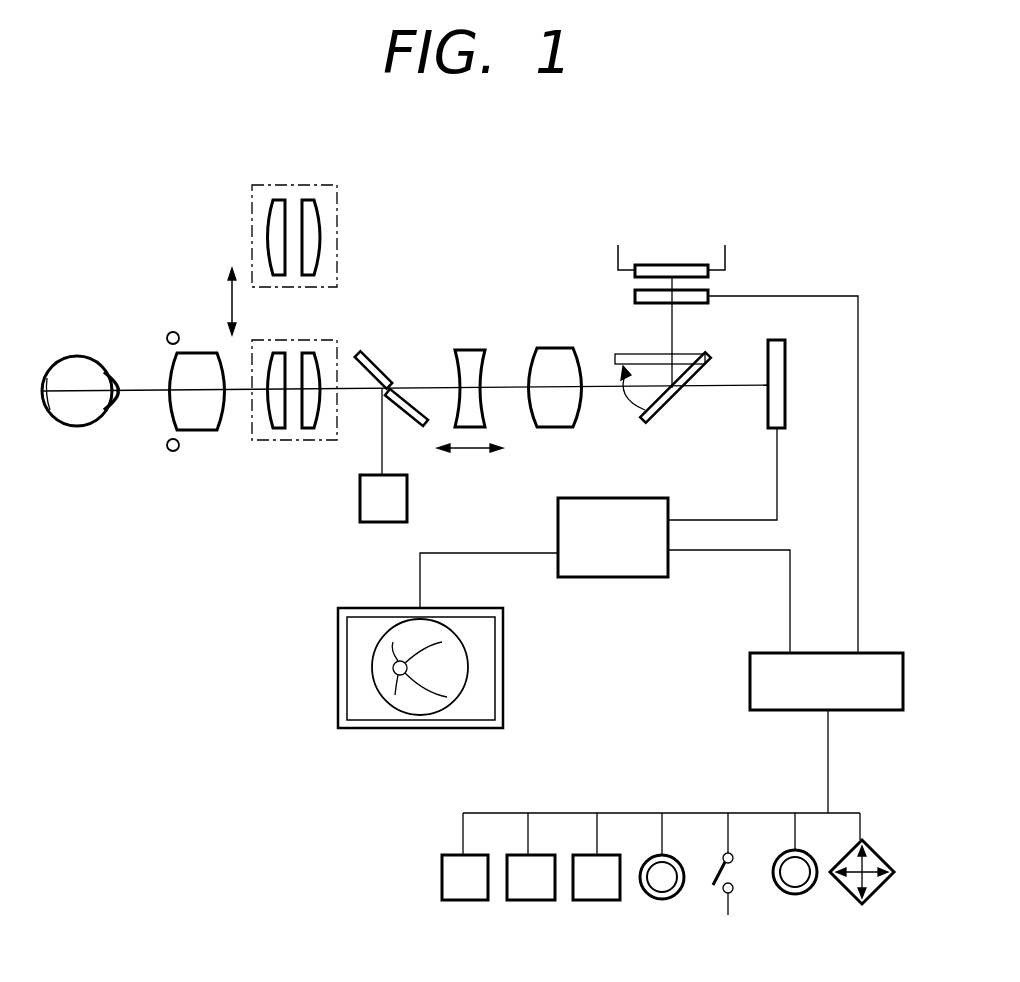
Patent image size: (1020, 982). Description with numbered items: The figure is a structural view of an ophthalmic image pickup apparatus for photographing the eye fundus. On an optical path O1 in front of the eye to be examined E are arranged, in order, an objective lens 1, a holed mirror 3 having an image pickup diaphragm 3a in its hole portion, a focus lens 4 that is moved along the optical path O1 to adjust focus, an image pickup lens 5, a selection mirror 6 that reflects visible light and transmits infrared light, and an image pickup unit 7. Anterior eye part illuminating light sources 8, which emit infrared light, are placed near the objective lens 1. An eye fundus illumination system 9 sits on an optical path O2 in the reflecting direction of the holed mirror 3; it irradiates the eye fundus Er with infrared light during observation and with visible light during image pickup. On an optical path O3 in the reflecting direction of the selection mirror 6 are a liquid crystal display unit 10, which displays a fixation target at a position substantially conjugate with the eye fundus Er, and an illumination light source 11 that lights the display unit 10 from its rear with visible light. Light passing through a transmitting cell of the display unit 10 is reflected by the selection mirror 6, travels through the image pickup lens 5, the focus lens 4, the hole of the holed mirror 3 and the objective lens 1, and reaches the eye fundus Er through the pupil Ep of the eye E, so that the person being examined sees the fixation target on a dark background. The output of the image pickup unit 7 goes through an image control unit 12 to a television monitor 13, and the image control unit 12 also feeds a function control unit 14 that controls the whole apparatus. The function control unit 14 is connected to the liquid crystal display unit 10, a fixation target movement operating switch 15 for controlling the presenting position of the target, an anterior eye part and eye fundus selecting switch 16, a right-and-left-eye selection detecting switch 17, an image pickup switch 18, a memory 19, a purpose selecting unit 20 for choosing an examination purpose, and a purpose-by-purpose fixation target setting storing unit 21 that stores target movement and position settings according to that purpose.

The eye to be examined E is at (75, 372).
The eye fundus Er is at (45, 398).
The pupil Ep is at (115, 404).
The anterior eye part illuminating light sources 8 is at (170, 332).
The objective lens 1 is at (196, 353).
The optical path O1 is at (345, 388).
The optical path O2 is at (382, 455).
The holed mirror 3 is at (372, 362).
The image pickup diaphragm 3a is at (397, 398).
The focus lens 4 is at (468, 350).
The image pickup lens 5 is at (552, 348).
The illumination light source 11 is at (677, 265).
The liquid crystal display unit 10 is at (635, 296).
The optical path O3 is at (672, 340).
The selection mirror 6 is at (670, 410).
The image pickup unit 7 is at (786, 362).
The eye fundus illumination system 9 is at (360, 512).
The image control unit 12 is at (588, 498).
The television monitor 13 is at (338, 645).
The function control unit 14 is at (750, 670).
The fixation target movement operating switch 15 is at (870, 895).
The anterior eye part and eye fundus selecting switch 16 is at (790, 895).
The right-and-left-eye selection detecting switch 17 is at (713, 887).
The image pickup switch 18 is at (655, 900).
The memory 19 is at (593, 900).
The purpose selecting unit 20 is at (527, 900).
The purpose-by-purpose fixation target setting storing unit 21 is at (460, 900).